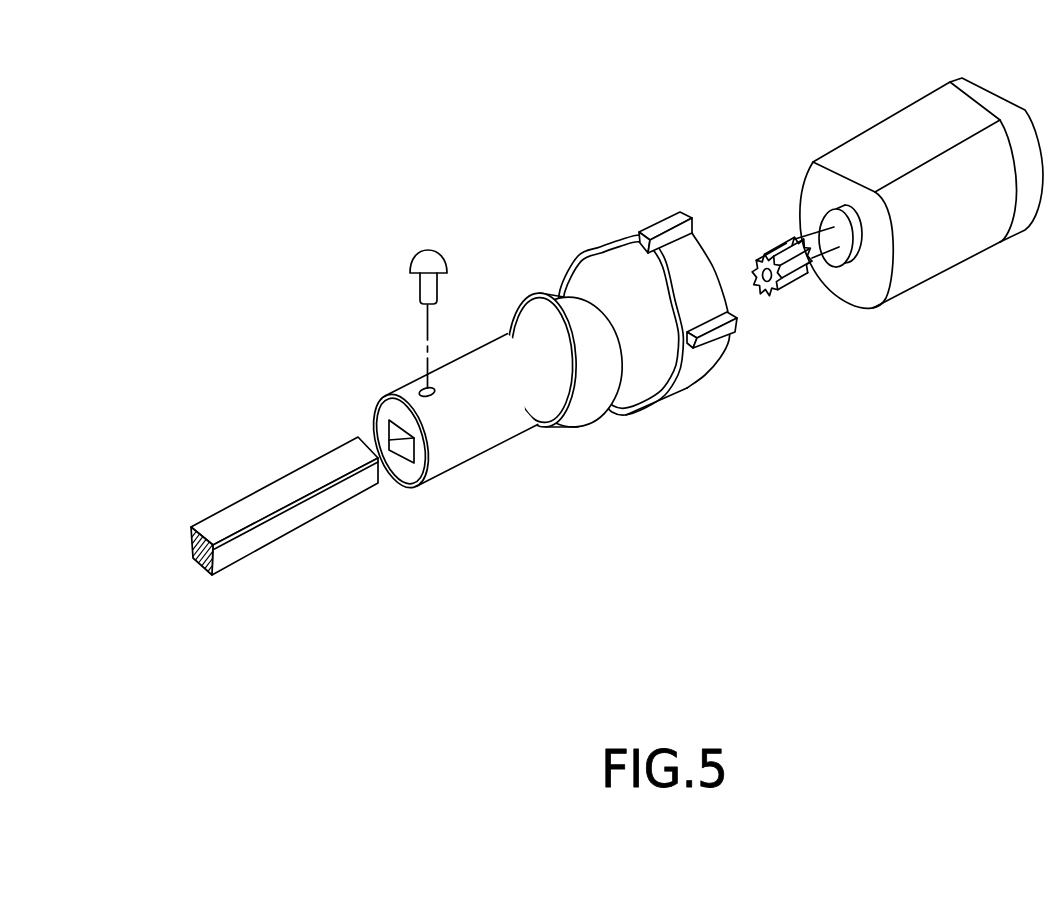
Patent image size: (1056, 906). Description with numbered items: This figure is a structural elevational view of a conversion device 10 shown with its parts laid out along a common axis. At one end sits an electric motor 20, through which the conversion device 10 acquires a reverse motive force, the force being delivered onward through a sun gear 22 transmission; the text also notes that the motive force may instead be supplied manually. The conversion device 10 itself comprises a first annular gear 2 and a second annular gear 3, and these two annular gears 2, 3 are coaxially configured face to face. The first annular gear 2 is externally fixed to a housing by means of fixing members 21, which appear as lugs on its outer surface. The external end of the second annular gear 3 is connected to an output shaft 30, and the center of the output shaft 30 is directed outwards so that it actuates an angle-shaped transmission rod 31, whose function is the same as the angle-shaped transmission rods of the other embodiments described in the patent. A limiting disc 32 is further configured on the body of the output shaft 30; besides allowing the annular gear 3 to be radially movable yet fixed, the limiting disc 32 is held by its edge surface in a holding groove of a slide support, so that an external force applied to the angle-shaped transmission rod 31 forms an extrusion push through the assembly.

The conversion device 10 is at (397, 197).
The first annular gear 2 is at (642, 223).
The second annular gear 3 is at (578, 278).
The fixing members 21 is at (708, 337).
The limiting disc 32 is at (583, 390).
The output shaft 30 is at (485, 429).
The angle-shaped transmission rod 31 is at (312, 508).
The electric motor 20 is at (937, 237).
The sun gear 22 is at (796, 274).